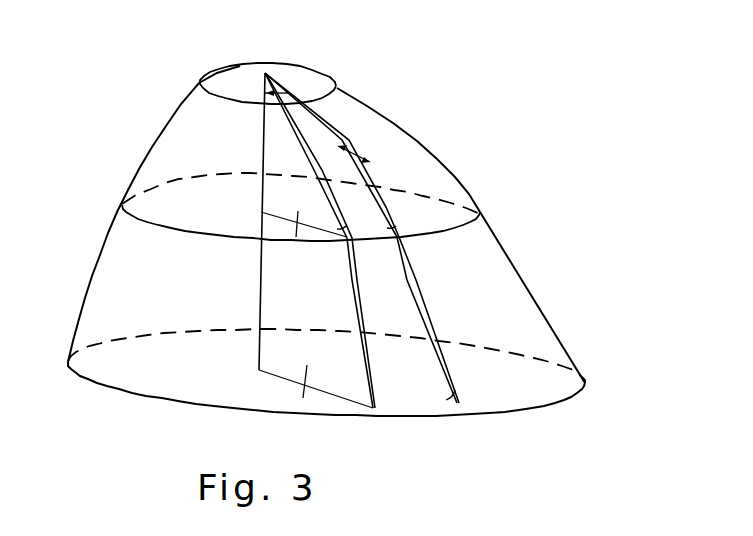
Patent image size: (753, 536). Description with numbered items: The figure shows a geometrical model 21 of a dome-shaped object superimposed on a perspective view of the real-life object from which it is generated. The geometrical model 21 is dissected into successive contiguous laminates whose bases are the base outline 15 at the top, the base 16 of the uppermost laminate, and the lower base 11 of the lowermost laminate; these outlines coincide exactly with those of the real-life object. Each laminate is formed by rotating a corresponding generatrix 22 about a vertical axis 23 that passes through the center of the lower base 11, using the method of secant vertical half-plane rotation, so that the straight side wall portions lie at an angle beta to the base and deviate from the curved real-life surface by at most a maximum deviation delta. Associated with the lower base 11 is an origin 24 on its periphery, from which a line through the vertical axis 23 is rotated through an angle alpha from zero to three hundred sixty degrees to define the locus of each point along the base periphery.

The lower base 11 is at (587, 385).
The base outline 15 is at (333, 84).
The lower base of the uppermost laminate 16 is at (481, 212).
The geometrical model 21 is at (470, 181).
The generatrix 22 is at (343, 141).
The vertical axis 23 is at (259, 285).
The origin 24 is at (374, 410).